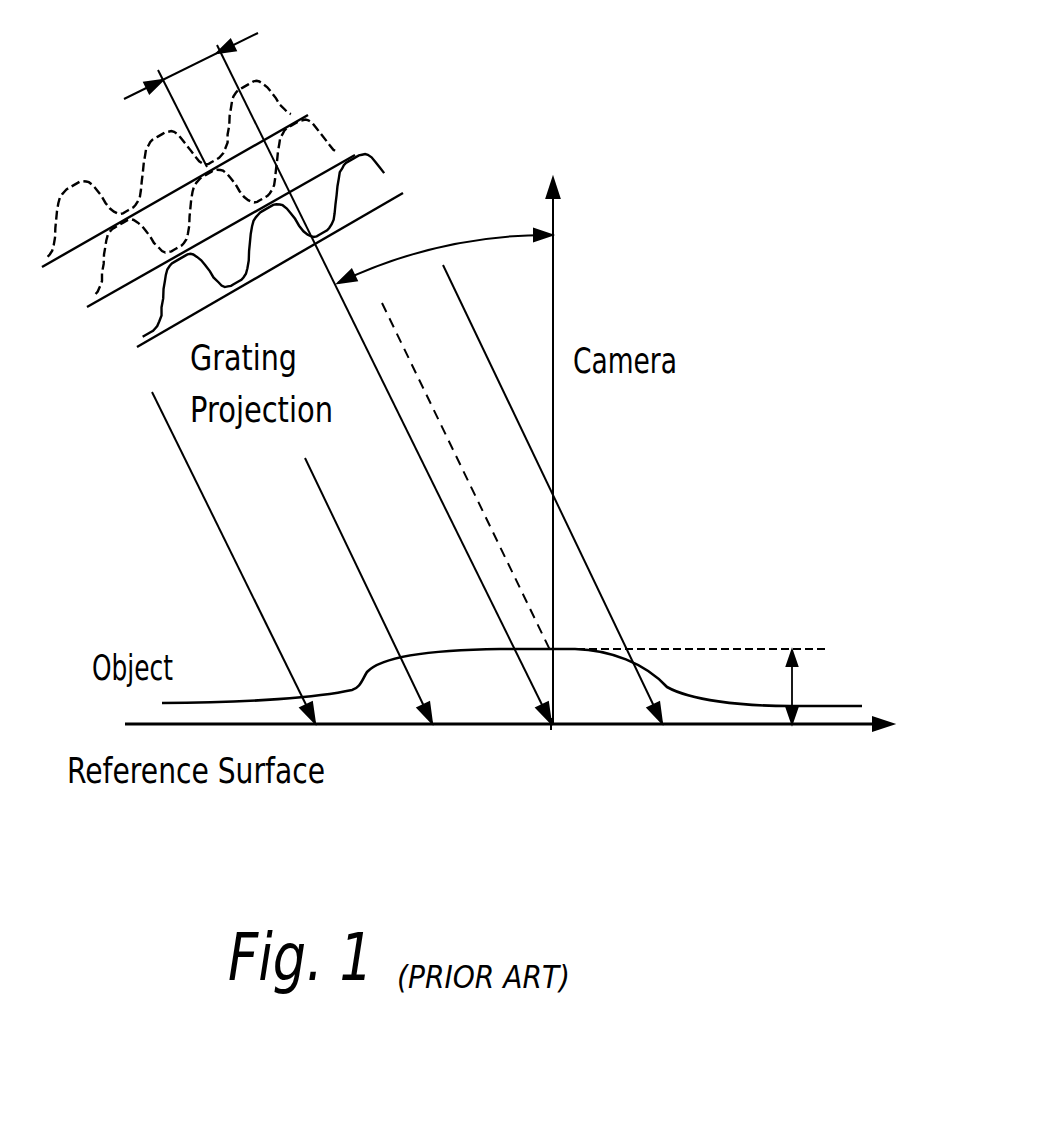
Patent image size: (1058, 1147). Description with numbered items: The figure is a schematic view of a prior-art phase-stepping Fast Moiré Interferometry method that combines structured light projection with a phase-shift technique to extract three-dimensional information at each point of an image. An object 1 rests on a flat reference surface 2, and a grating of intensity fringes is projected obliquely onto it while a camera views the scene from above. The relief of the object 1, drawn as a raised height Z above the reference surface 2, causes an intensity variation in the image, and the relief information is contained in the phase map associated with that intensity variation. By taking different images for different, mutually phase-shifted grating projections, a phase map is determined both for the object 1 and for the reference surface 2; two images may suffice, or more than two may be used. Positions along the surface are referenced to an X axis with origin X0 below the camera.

The object 1 is at (847, 705).
The reference surface 2 is at (827, 727).
The object height Z is at (693, 686).
The X axis X is at (906, 732).
The origin point on reference surface X0 is at (561, 752).